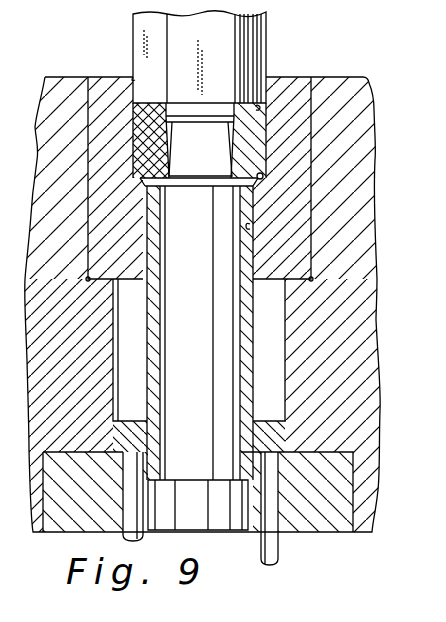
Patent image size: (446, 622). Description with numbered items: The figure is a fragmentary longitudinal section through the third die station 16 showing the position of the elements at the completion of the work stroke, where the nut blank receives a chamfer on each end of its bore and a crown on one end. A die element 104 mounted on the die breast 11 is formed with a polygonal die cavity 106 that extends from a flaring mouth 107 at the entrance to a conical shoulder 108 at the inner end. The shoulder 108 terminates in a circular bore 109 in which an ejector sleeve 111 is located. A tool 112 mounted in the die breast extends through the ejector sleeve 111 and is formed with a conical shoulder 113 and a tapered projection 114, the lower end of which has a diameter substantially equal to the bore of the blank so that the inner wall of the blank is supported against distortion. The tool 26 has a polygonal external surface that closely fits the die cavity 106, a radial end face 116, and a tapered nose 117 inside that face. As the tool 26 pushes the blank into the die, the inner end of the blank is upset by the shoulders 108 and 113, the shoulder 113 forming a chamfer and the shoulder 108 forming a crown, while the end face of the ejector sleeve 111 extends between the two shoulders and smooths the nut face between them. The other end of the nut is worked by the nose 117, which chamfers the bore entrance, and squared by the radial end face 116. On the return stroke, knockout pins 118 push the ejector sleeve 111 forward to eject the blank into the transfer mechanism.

The die breast 11 is at (360, 111).
The third die station 16 is at (278, 58).
The tool 26 is at (264, 34).
The die element 104 is at (294, 86).
The polygonal die cavity 106 is at (259, 131).
The flaring mouth 107 is at (138, 78).
The conical shoulder 108 is at (263, 177).
The circular bore 109 is at (249, 227).
The ejector sleeve 111 is at (251, 303).
The tool 112 is at (228, 360).
The conical shoulder 113 is at (144, 186).
The tapered projection 114 is at (216, 162).
The radial end face 116 is at (260, 109).
The tapered nose 117 is at (165, 110).
The knockout pins 118 is at (144, 539).